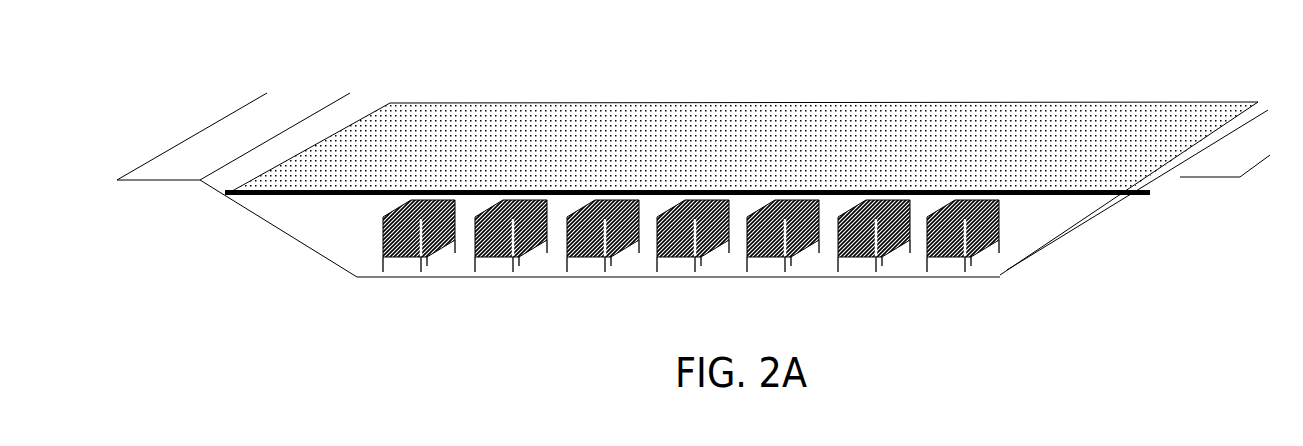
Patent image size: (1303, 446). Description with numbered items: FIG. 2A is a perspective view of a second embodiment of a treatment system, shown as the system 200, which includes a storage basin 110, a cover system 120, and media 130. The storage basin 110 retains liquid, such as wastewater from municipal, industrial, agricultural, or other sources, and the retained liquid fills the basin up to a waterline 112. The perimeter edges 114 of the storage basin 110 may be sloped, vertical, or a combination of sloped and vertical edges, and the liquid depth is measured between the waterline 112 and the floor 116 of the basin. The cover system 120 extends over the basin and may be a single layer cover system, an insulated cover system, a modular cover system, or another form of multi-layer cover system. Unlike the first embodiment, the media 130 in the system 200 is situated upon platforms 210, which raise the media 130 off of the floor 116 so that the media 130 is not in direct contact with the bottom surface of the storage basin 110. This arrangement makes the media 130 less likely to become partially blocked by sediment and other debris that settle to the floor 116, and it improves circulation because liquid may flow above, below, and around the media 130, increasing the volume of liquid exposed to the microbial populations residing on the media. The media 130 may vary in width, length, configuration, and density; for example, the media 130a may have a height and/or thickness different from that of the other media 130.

The system 200 is at (652, 52).
The storage basin 110 is at (371, 252).
The waterline 112 is at (278, 197).
The perimeter edges 114 is at (284, 233).
The floor 116 is at (513, 273).
The cover system 120 is at (960, 132).
The media 130 is at (610, 250).
The media 130a is at (980, 248).
The platforms 210 is at (747, 263).